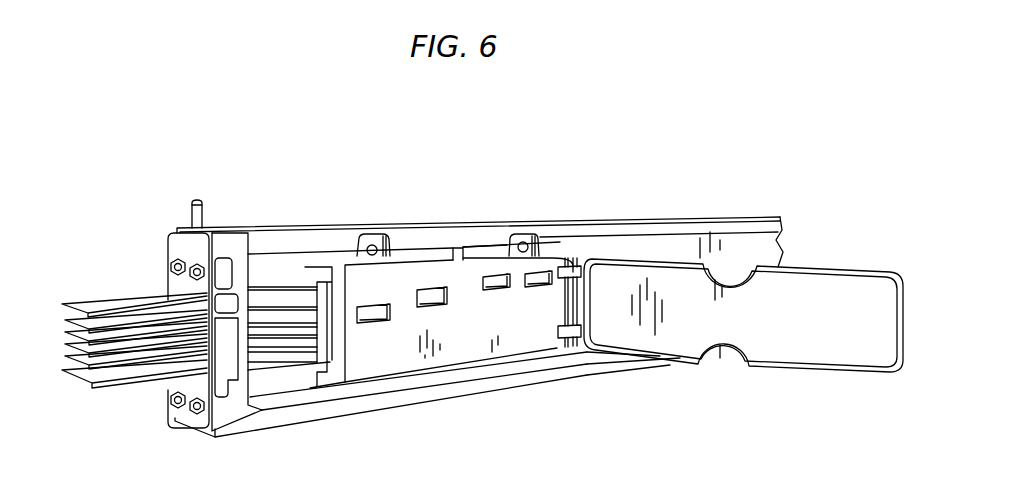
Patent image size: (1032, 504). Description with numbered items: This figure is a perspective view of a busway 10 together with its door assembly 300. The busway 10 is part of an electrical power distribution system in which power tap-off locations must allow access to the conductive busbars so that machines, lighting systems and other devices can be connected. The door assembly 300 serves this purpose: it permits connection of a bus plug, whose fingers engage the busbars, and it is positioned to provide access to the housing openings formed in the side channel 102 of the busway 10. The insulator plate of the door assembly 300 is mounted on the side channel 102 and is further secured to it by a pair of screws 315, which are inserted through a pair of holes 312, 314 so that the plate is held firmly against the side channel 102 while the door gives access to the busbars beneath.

The busway 10 is at (482, 294).
The side channel 102 is at (296, 273).
The door assembly 300 is at (448, 240).
The hole 312 is at (391, 246).
The hole 314 is at (516, 235).
The screw 315 is at (372, 245).